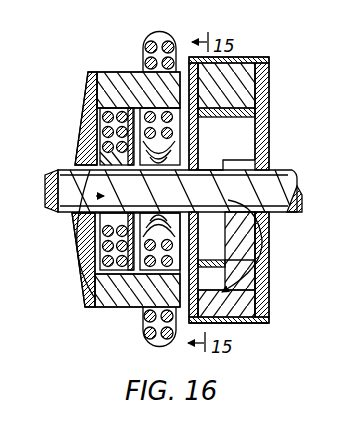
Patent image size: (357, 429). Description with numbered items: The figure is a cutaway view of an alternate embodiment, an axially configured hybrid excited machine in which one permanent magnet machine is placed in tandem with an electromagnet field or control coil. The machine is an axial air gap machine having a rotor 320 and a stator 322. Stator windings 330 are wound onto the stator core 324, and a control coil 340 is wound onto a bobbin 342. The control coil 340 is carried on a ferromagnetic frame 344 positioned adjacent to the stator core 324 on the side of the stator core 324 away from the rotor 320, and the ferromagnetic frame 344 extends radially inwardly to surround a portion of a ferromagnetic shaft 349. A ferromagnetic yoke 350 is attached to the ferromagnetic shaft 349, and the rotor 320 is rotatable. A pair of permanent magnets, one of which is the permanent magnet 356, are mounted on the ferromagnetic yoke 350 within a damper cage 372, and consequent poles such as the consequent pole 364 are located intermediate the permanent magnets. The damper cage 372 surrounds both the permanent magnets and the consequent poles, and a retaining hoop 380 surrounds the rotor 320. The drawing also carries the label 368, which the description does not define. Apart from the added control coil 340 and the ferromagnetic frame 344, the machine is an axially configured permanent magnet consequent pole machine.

The rotor 320 is at (272, 260).
The stator 322 is at (70, 261).
The stator core 324 is at (117, 82).
The stator windings 330 is at (150, 42).
The control coil 340 is at (104, 124).
The bobbin 342 is at (112, 150).
The ferromagnetic frame 344 is at (86, 92).
The ferromagnetic shaft 349 is at (288, 172).
The ferromagnetic yoke 350 is at (266, 149).
The permanent magnet 356 is at (262, 84).
The consequent pole 364 is at (268, 281).
The flux path 368 is at (347, 233).
The damper cage 372 is at (271, 60).
The retaining hoop 380 is at (258, 323).